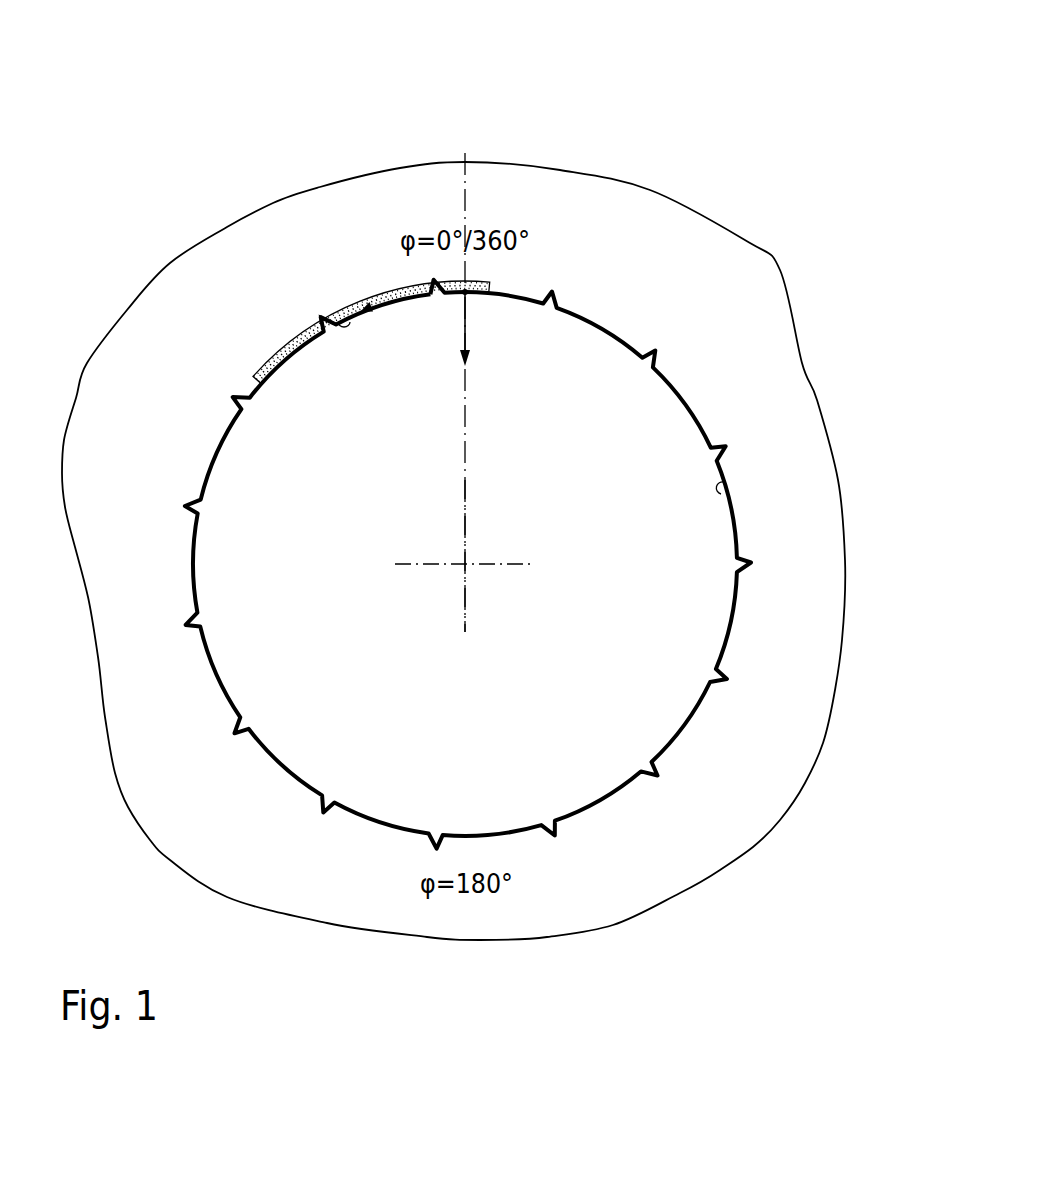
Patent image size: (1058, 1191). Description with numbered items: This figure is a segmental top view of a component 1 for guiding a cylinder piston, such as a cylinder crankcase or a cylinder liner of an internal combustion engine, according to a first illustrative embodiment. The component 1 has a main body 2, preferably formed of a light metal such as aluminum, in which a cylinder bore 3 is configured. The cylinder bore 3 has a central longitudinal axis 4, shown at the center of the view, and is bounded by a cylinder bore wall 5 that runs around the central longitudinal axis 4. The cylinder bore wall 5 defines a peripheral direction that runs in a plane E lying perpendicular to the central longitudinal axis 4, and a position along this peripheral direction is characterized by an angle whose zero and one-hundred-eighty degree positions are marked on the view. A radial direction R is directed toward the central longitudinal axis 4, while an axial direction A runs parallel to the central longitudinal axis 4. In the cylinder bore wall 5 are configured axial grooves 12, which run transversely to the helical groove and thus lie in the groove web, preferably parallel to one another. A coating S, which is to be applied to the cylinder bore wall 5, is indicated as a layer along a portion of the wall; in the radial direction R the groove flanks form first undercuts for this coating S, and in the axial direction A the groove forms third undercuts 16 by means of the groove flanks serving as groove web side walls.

The component 1 is at (498, 476).
The main body 2 is at (788, 333).
The cylinder bore 3 is at (695, 457).
The central longitudinal axis 4 is at (465, 564).
The cylinder bore wall 5 is at (730, 495).
The axial grooves 12 is at (323, 320).
The third undercuts 16 is at (348, 318).
The coating S is at (288, 355).
The axial direction A is at (470, 292).
The radial direction R is at (470, 330).
The plane E is at (730, 71).